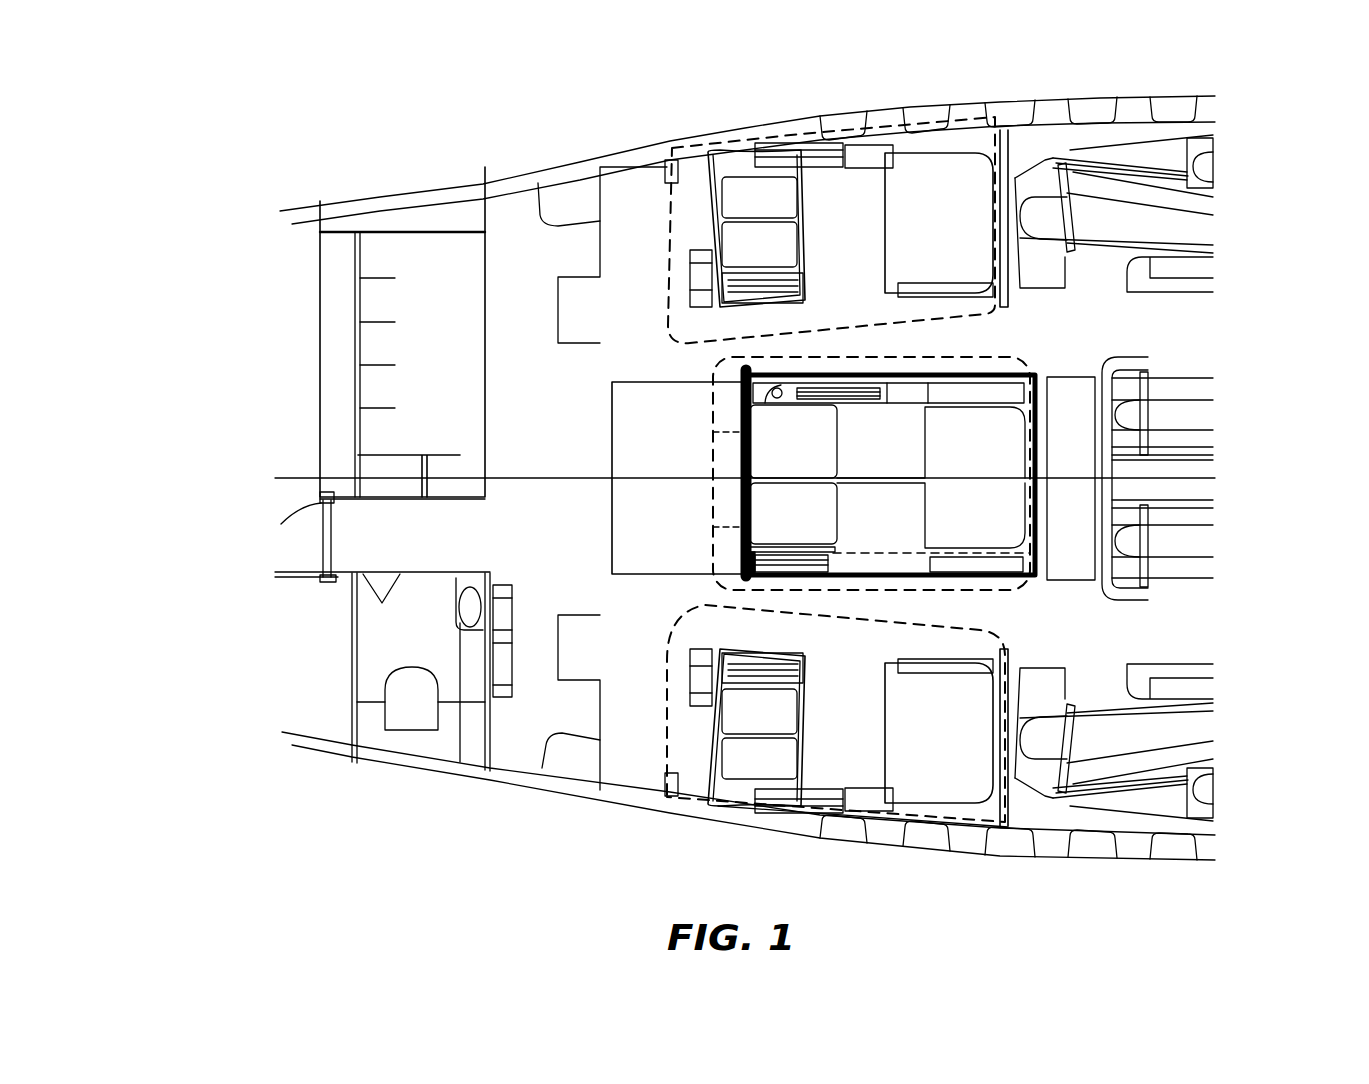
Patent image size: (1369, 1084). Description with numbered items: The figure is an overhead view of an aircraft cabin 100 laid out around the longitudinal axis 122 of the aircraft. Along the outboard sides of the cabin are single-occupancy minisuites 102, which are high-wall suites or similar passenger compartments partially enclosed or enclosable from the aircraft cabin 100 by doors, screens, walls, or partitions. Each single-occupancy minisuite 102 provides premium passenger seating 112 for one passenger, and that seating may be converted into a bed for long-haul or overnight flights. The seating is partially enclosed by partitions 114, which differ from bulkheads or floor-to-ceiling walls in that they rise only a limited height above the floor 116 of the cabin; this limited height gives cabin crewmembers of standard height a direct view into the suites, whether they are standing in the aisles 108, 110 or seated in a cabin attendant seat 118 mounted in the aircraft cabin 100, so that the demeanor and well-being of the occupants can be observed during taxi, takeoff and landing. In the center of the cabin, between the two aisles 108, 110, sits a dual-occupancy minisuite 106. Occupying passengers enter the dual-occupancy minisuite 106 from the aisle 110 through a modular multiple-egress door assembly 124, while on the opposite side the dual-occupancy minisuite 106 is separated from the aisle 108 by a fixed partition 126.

The aircraft cabin 100 is at (138, 133).
The single-occupancy minisuite 102 is at (715, 143).
The dual-occupancy minisuite 106 is at (713, 470).
The aisle 108 is at (1114, 213).
The aisle 110 is at (1143, 335).
The premium passenger seating 112 is at (950, 198).
The partition 114 is at (1008, 658).
The floor 116 is at (547, 512).
The cabin attendant seat 118 is at (700, 695).
The longitudinal axis 122 is at (302, 477).
The modular multiple-egress door assembly 124 is at (737, 566).
The fixed partition 126 is at (957, 377).